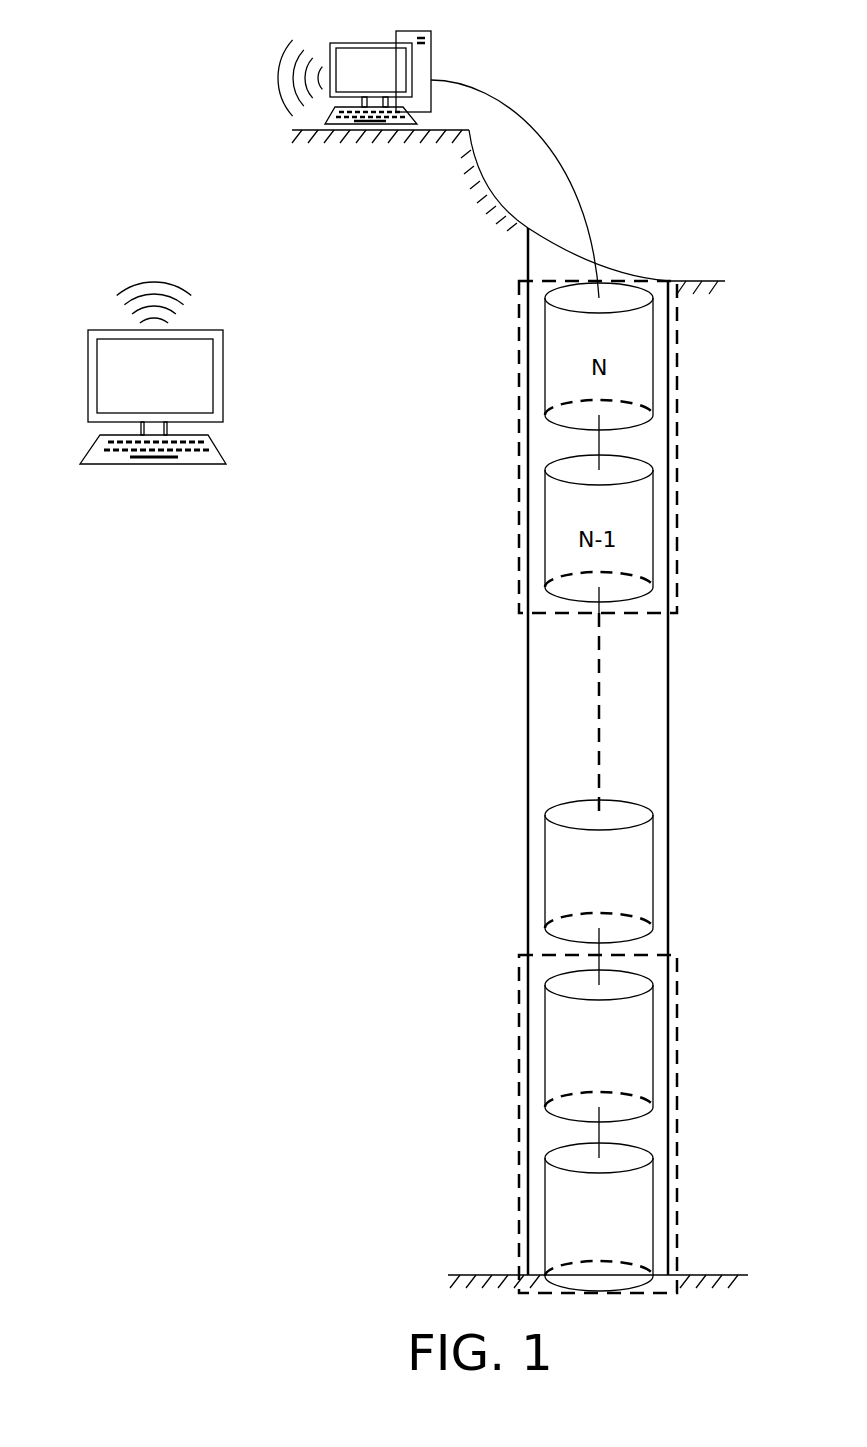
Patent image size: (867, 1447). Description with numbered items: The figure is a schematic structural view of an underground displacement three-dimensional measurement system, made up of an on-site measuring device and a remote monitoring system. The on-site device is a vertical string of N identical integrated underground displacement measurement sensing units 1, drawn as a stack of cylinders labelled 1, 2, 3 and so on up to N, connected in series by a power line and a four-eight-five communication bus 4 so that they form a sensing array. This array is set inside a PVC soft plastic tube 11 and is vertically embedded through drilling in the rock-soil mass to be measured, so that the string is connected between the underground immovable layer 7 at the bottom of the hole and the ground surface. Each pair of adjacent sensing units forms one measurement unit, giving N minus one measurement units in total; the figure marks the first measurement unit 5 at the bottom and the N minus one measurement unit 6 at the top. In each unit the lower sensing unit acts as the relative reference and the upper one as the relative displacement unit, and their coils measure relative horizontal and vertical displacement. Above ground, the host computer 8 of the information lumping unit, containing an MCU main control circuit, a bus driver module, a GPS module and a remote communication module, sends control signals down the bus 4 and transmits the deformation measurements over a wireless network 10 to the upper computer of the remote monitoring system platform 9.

The integrated underground displacement measurement sensing unit 1 is at (599, 1217).
The second measurement unit 2 is at (599, 1046).
The third measurement unit 3 is at (599, 871).
The 485 communication bus 4 is at (565, 158).
The first measurement unit 5 is at (677, 1124).
The N−1 measurement unit 6 is at (677, 441).
The immovable layer 7 is at (520, 709).
The host computer 8 is at (378, 63).
The remote monitoring system platform 9 is at (153, 415).
The wireless network 10 is at (220, 170).
The PVC soft plastic tube 11 is at (530, 345).